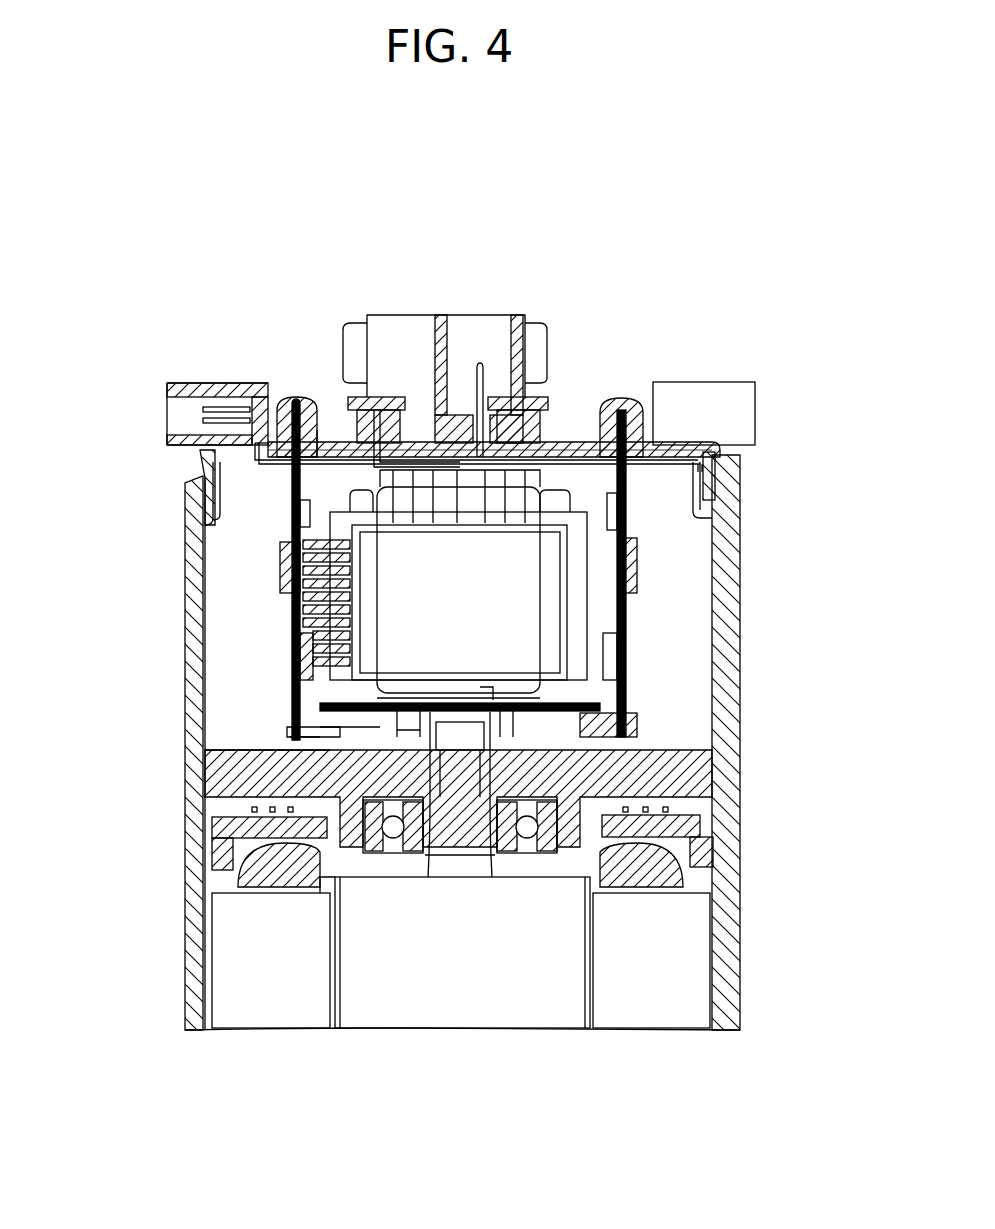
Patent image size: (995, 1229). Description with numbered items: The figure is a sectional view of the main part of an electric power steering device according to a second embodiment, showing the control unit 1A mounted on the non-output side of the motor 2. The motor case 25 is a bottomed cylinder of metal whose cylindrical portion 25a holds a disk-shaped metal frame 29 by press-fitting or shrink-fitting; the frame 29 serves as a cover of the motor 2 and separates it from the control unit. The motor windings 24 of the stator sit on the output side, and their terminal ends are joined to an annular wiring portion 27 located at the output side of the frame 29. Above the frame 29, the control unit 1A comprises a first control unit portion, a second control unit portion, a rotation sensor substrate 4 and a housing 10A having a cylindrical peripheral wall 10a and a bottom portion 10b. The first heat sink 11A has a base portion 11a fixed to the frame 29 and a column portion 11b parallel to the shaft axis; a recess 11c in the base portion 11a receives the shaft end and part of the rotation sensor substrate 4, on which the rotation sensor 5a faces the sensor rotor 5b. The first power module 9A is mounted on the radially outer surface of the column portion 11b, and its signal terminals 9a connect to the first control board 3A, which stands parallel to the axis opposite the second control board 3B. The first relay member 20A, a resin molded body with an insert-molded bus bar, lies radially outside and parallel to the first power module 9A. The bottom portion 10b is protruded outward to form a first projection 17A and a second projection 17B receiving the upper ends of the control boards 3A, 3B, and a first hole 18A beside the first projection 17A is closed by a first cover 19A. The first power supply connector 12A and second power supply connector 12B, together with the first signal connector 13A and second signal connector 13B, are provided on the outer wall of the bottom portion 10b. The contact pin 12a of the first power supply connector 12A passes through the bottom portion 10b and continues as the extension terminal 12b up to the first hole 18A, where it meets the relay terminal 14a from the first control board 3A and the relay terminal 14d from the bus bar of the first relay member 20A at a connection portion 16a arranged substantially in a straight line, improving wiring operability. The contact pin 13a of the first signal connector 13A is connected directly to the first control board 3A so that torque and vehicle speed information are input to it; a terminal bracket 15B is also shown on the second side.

The control unit 1A is at (193, 455).
The motor 2 is at (177, 950).
The first control board 3A is at (283, 565).
The second control board 3B is at (712, 520).
The rotation sensor substrate 4 is at (300, 735).
The rotation sensor 5a is at (437, 805).
The sensor rotor 5b is at (480, 810).
The signal terminals 9a is at (305, 605).
The first power module 9A is at (570, 600).
The cylindrical peripheral wall 10a is at (198, 470).
The housing 10A is at (197, 475).
The bottom portion 10b is at (568, 447).
The base portion 11a is at (295, 765).
The first heat sink 11A is at (592, 580).
The column portion 11b is at (298, 660).
The recess 11c is at (512, 815).
The contact pin 12a is at (481, 362).
The first power supply connector 12A is at (513, 317).
The extension terminal 12b is at (428, 350).
The second power supply connector 12B is at (440, 315).
The contact pin 13a is at (175, 404).
The first signal connector 13A is at (200, 385).
The second signal connector 13B is at (697, 383).
The relay terminal 14a is at (296, 398).
The relay terminal 14d is at (292, 497).
The terminal bracket 15B is at (550, 398).
The connection portion 16a is at (318, 430).
The first projection 17A is at (262, 425).
The second projection 17B is at (630, 400).
The first hole 18A is at (282, 420).
The first cover 19A is at (380, 398).
The first relay member 20A is at (548, 663).
The motor windings 24 is at (690, 886).
The motor case 25 is at (738, 980).
The cylindrical portion 25a is at (722, 845).
The annular wiring portion 27 is at (190, 866).
The frame 29 is at (715, 783).